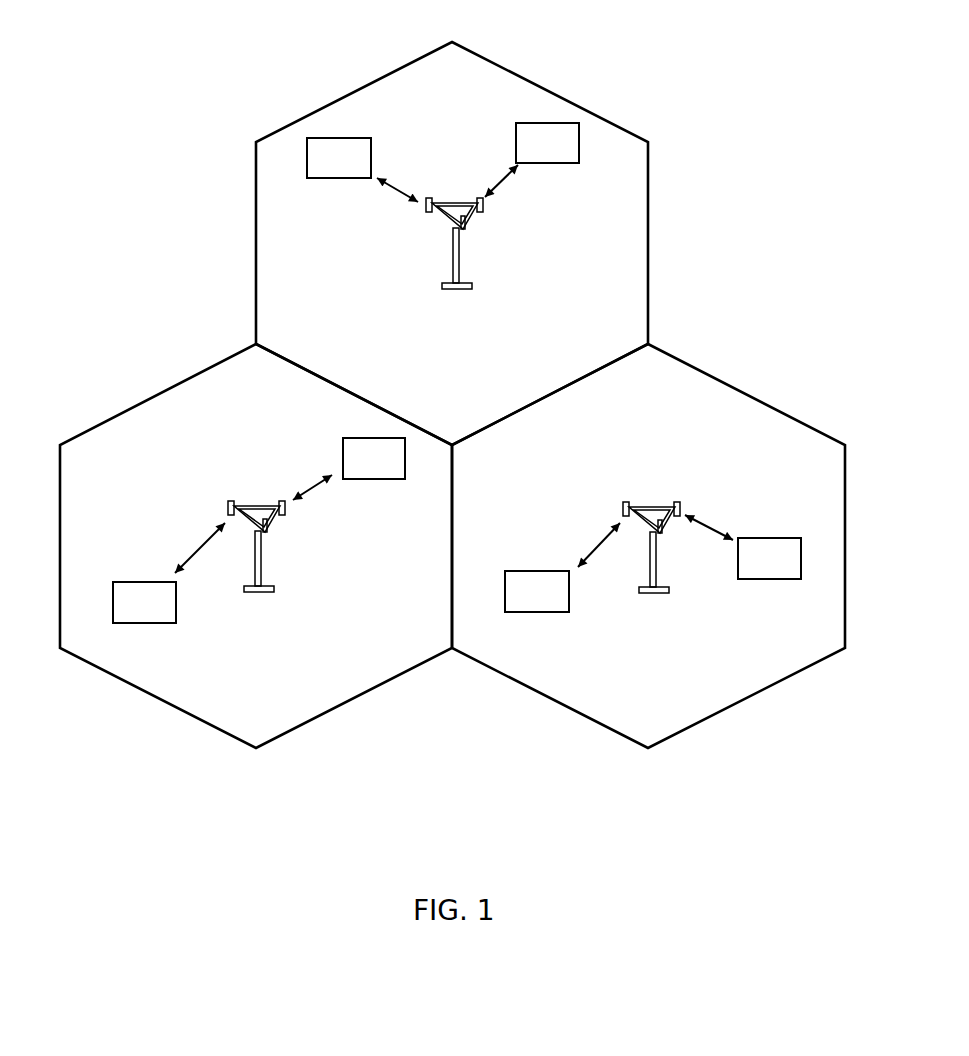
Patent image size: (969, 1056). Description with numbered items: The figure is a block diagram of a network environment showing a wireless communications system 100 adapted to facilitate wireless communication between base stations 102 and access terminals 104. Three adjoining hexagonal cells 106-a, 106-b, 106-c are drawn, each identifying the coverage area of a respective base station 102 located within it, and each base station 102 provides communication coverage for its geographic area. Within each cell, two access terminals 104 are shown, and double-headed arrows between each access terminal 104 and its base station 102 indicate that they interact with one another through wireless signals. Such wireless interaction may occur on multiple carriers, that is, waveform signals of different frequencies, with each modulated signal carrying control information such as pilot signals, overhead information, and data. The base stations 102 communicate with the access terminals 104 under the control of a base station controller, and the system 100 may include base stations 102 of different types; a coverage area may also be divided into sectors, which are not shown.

The wireless communications system 100 is at (790, 81).
The base station 102 is at (457, 204).
The access terminal 104 is at (330, 178).
The cell 106-a is at (140, 407).
The cell 106-b is at (538, 83).
The cell 106-c is at (745, 392).